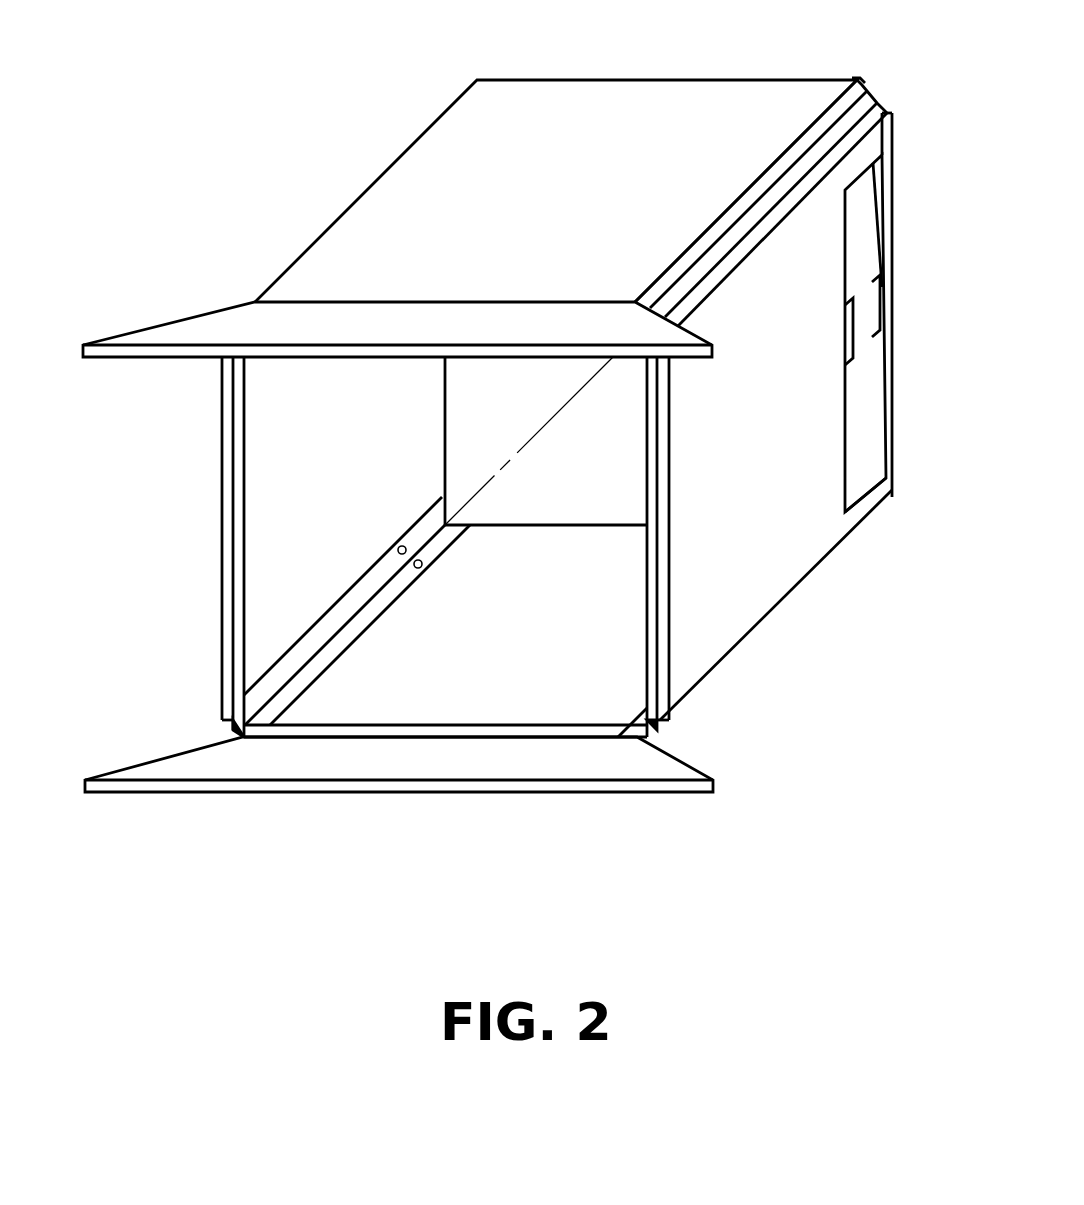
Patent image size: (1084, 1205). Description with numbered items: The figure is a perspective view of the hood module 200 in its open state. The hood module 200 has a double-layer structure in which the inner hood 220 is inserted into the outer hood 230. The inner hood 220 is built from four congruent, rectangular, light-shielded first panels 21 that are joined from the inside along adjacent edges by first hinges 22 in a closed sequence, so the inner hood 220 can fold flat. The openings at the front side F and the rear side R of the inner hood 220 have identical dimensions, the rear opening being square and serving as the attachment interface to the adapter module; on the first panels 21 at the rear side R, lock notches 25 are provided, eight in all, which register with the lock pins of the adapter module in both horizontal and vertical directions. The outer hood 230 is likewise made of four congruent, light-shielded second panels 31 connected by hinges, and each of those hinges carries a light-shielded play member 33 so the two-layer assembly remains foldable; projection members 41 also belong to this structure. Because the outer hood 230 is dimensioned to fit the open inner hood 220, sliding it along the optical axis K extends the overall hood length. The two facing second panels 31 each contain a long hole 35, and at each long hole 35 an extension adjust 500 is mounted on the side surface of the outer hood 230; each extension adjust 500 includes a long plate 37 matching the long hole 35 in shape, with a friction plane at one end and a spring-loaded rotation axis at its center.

The hood module 200 is at (316, 163).
The projection member 41 is at (150, 343).
The second panel 31 is at (670, 155).
The play member 33 is at (862, 95).
The first panel 21 is at (237, 487).
The first hinge 22 is at (433, 518).
The lock notch 25 is at (398, 547).
The inner hood 220 is at (630, 502).
The outer hood 230 is at (206, 413).
The extension adjust 500 is at (877, 496).
The long hole 35 is at (880, 170).
The long plate 37 is at (853, 512).
The optical axis K is at (558, 412).
The rear side R is at (875, 100).
The front side F is at (243, 735).